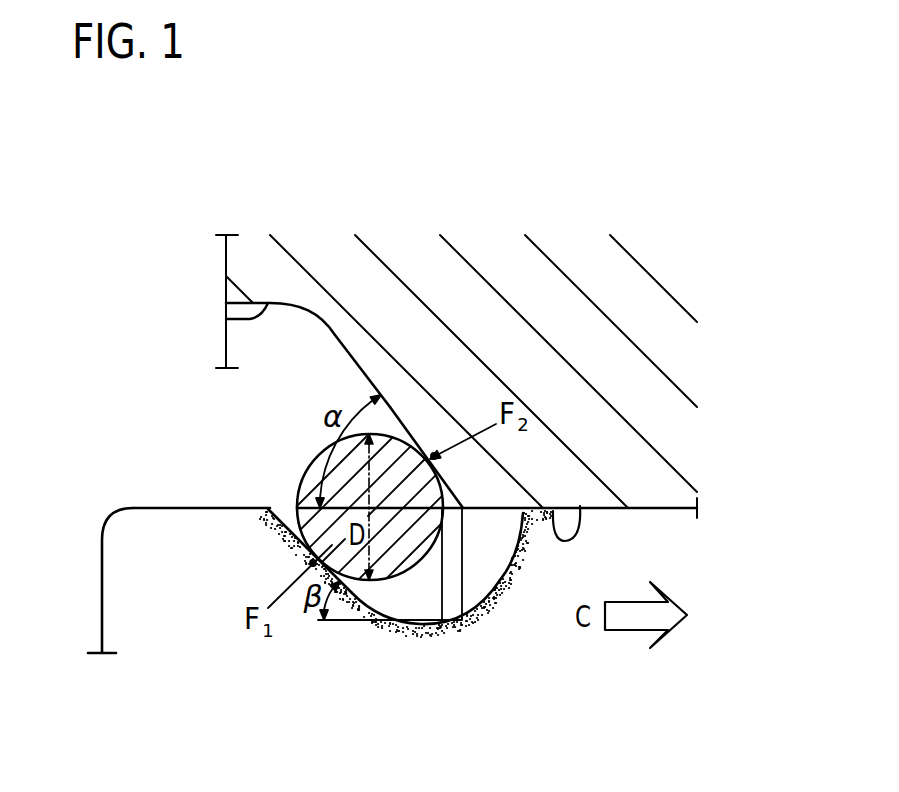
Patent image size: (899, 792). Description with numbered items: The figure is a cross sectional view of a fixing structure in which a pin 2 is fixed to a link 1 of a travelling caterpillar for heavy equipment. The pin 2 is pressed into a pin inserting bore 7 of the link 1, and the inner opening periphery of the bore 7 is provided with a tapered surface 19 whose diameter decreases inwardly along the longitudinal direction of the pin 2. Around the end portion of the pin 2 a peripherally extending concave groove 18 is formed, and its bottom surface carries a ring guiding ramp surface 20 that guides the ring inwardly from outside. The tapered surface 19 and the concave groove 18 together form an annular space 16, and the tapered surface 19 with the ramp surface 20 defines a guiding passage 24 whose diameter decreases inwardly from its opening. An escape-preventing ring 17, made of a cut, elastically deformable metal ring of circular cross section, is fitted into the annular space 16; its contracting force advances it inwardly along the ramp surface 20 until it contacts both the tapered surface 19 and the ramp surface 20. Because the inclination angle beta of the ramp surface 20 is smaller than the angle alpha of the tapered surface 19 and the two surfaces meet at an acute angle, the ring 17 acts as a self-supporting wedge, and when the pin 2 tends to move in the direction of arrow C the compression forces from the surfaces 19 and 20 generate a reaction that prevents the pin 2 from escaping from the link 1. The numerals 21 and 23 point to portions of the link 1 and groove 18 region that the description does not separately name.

The link 1 is at (226, 250).
The pin 2 is at (113, 518).
The pin inserting bore 7 is at (580, 506).
The annular space 16 is at (263, 405).
The escape-preventing ring 17 is at (401, 423).
The peripherally extending concave groove 18 is at (453, 626).
The tapered surface 19 is at (357, 365).
The ring guiding ramp surface 20 is at (293, 515).
The flange portion 21 is at (226, 318).
The groove side wall 23 is at (503, 557).
The guiding passage 24 is at (243, 443).